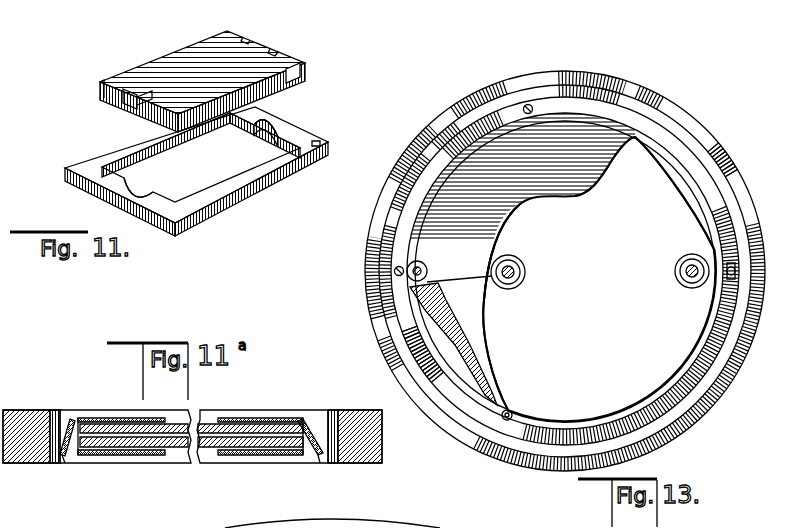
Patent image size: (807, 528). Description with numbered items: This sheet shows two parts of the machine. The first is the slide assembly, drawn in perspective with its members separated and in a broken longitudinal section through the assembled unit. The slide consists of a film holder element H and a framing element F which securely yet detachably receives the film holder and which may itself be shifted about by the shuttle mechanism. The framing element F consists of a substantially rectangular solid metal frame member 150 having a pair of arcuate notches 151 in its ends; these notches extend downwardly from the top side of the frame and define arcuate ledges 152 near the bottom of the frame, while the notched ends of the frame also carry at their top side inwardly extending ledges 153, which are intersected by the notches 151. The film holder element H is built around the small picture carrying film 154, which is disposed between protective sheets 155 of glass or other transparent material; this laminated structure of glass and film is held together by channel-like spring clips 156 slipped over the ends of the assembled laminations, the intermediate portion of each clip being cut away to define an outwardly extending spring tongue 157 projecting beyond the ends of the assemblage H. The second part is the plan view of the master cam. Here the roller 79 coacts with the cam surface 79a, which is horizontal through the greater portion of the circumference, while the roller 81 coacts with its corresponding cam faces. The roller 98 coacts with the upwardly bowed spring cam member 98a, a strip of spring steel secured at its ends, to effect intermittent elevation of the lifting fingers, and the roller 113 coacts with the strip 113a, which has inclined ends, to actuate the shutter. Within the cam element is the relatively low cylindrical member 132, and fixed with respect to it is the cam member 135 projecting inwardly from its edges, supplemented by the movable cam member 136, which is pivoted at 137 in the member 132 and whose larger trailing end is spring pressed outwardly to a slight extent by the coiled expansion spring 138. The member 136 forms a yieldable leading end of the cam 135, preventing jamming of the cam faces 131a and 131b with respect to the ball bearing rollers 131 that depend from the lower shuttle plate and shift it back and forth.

In FIG. 13, the roller 79 is at (410, 173).
In FIG. 11A, the cam surface 79a is at (332, 527).
In FIG. 13, the roller 81 is at (730, 168).
In FIG. 13, the roller 98 is at (738, 270).
In FIG. 13, the spring cam member 98a is at (445, 137).
In FIG. 13, the roller 113 is at (418, 267).
In FIG. 13, the strip 113a is at (418, 347).
In FIG. 13, the ball bearing rollers 131 is at (527, 277).
In FIG. 13, the cam face 131a is at (563, 203).
In FIG. 13, the cam face 131b is at (482, 347).
In FIG. 13, the cylindrical member 132 is at (683, 368).
In FIG. 13, the cam member 135 is at (517, 187).
In FIG. 13, the movable cam member 136 is at (473, 320).
In FIG. 13, the pivot 137 is at (513, 413).
In FIG. 13, the coiled expansion spring 138 is at (435, 285).
In FIG. 11, the frame member 150 is at (222, 192).
In FIG. 11, the arcuate notches 151 is at (267, 127).
In FIG. 11A, the arcuate notches 151 is at (55, 410).
In FIG. 11, the arcuate ledges 152 is at (270, 142).
In FIG. 11A, the arcuate ledges 152 is at (65, 463).
In FIG. 11, the ledges 153 is at (320, 143).
In FIG. 11A, the ledges 153 is at (75, 420).
In FIG. 11A, the film 154 is at (215, 440).
In FIG. 11, the protective sheets 155 is at (192, 53).
In FIG. 11A, the protective sheets 155 is at (190, 436).
In FIG. 11, the spring clips 156 is at (115, 80).
In FIG. 11, the spring tongue 157 is at (127, 107).
In FIG. 11A, the spring tongue 157 is at (320, 414).
In FIG. 11, the film holder element H is at (177, 47).
In FIG. 11, the framing element F is at (318, 127).
In FIG. 11A, the framing element F is at (389, 441).